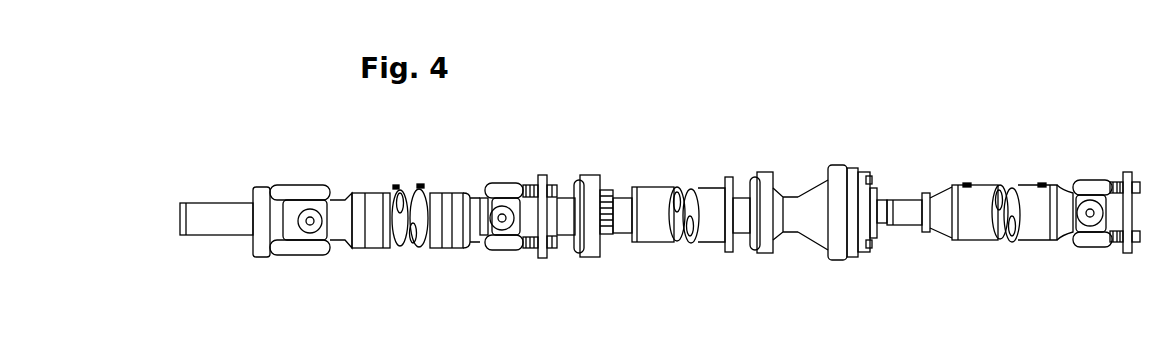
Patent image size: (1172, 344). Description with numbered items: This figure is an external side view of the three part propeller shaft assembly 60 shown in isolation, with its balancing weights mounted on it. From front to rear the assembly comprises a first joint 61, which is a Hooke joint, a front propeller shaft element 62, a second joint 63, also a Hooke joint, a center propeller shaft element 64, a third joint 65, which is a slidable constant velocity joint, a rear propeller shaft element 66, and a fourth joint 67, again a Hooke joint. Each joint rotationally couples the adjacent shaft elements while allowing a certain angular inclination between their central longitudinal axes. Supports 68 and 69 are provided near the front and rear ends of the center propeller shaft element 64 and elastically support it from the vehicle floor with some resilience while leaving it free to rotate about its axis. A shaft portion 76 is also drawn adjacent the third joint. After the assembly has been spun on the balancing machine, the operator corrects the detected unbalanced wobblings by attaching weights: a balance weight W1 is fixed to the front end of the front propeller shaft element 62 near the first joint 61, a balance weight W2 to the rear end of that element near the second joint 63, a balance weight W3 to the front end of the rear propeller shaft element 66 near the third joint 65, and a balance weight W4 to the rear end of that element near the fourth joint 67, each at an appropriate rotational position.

The three part propeller shaft assembly 60 is at (708, 143).
The first joint 61 is at (300, 176).
The front propeller shaft element 62 is at (406, 240).
The second joint 63 is at (506, 174).
The center propeller shaft element 64 is at (665, 240).
The third joint 65 is at (839, 158).
The rear propeller shaft element 66 is at (987, 232).
The fourth joint 67 is at (1098, 172).
The support 68 is at (592, 250).
The support 69 is at (763, 250).
The shaft 76 is at (902, 217).
The balance weight W1 is at (395, 178).
The balance weight W2 is at (424, 178).
The balance weight W3 is at (968, 172).
The balance weight W4 is at (1043, 172).